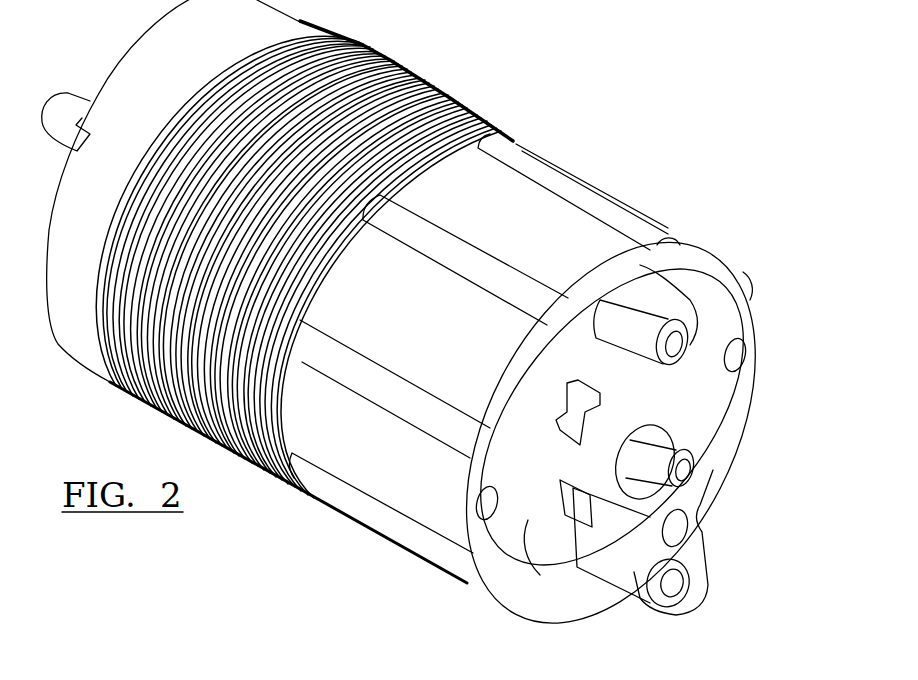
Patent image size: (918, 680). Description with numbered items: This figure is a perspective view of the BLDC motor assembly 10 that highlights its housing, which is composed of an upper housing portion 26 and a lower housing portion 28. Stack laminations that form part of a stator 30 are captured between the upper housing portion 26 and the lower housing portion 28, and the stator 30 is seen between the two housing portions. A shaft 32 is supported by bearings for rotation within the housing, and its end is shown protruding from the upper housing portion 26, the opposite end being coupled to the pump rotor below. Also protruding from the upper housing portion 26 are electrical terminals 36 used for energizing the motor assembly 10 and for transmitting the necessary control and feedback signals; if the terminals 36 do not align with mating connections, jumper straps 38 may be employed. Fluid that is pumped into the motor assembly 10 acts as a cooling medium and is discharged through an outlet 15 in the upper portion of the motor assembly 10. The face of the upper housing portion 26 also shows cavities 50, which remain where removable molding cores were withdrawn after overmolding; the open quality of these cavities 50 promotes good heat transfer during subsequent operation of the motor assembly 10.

The motor assembly 10 is at (637, 97).
The outlet 15 is at (572, 441).
The upper housing portion 26 is at (603, 208).
The lower housing portion 28 is at (318, 24).
The stator 30 is at (462, 102).
The shaft 32 is at (682, 470).
The electrical terminals 36 is at (672, 345).
The jumper straps 38 is at (725, 358).
The cavities 50 is at (517, 400).